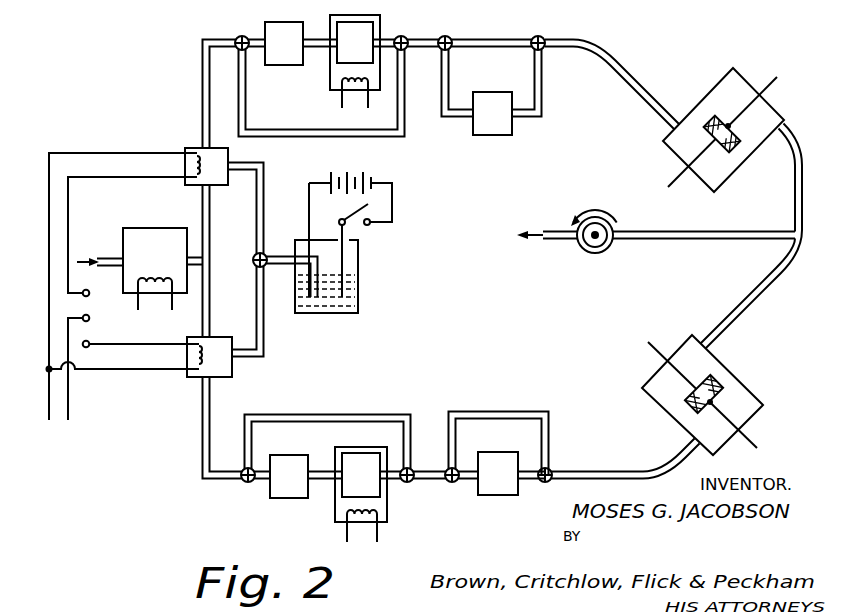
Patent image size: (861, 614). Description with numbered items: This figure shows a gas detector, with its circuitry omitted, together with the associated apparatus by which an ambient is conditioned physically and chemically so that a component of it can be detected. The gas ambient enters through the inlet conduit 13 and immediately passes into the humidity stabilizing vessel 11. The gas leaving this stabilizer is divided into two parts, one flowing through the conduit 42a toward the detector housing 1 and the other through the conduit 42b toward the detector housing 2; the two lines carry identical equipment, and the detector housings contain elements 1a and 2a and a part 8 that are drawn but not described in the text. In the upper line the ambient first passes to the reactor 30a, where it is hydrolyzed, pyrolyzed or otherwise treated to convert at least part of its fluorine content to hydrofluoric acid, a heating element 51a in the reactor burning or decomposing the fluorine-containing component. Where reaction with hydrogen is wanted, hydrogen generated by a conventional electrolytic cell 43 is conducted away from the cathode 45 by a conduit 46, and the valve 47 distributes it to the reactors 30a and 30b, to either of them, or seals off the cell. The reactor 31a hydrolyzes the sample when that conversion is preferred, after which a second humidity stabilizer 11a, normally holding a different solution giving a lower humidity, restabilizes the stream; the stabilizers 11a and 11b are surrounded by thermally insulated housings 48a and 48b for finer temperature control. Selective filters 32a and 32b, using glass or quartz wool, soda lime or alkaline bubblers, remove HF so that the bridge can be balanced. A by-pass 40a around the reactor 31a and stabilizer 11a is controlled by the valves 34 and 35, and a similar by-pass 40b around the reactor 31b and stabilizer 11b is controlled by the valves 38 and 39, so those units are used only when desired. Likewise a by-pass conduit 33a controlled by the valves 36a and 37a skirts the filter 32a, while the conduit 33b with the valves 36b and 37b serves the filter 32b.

The detector housing 1 is at (742, 72).
The coil of first device 1a is at (707, 114).
The detector housing 2 is at (765, 403).
The coil of second device 2a is at (723, 384).
The element 8 is at (659, 0).
The humidity stabilizing vessel 11 is at (148, 228).
The second humidity stabilizer 11a is at (364, 20).
The humidity stabilizer 11b is at (363, 453).
The inlet conduit 13 is at (113, 257).
The reactor 30a is at (198, 146).
The reactor 30b is at (226, 378).
The reactor 31a is at (278, 22).
The reactor 31b is at (300, 455).
The selective filter 32a is at (498, 136).
The selective filter 32b is at (503, 496).
The by-pass conduit 33a is at (515, 37).
The by-pass conduit 33b is at (497, 412).
The valve 34 is at (249, 36).
The valve 35 is at (407, 36).
The valve 36a is at (453, 37).
The valve 36b is at (456, 466).
The valve 37a is at (553, 34).
The valve 37b is at (553, 468).
The valve 38 is at (246, 482).
The valve 39 is at (408, 482).
The by-pass 40a is at (380, 138).
The by-pass 40b is at (349, 416).
The conduit 42a is at (202, 55).
The conduit 42b is at (212, 302).
The electrolytic cell 43 is at (359, 303).
The cathode 45 is at (305, 299).
The conduit 46 is at (281, 256).
The valve 47 is at (253, 255).
The thermally insulated housing 48a is at (383, 19).
The thermally insulated housing 48b is at (358, 447).
The heating element 51a is at (191, 167).